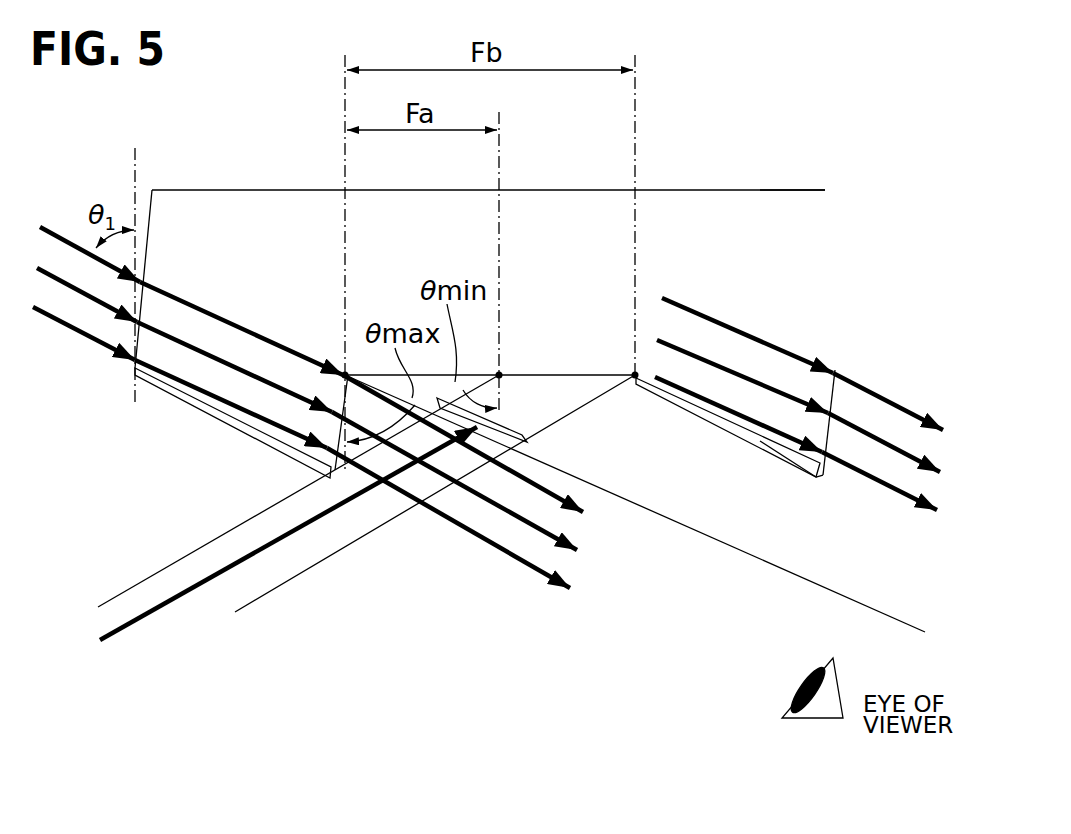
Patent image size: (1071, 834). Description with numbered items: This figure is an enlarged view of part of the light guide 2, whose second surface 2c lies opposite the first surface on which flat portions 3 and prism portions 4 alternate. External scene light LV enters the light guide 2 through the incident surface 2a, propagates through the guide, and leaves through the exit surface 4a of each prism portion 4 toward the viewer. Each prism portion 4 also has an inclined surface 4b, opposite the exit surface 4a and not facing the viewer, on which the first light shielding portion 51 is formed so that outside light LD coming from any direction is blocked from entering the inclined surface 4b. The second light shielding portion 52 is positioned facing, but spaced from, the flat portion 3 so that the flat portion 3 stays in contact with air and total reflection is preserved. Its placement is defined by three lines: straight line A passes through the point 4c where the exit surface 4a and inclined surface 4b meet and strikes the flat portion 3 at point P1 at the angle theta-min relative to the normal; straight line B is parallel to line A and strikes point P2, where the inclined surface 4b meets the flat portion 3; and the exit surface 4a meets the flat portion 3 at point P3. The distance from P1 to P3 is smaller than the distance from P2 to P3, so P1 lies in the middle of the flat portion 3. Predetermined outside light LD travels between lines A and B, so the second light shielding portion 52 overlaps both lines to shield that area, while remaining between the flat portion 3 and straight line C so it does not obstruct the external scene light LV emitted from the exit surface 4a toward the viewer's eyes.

The light guide 2 is at (698, 215).
The incident surface 2a is at (136, 294).
The second surface 2c is at (783, 190).
The flat portion 3 is at (567, 378).
The prism portion 4 is at (816, 471).
The exit surface 4a is at (828, 440).
The inclined surface 4b is at (788, 487).
The point where the exit surface and the inclined surface intersect 4c is at (330, 472).
The first light shielding portion 51 is at (731, 430).
The second light shielding portion 52 is at (520, 420).
The straight line A is at (176, 560).
The straight line B is at (300, 574).
The straight line C is at (888, 612).
The outside light LD is at (163, 612).
The external scene light LV is at (60, 232).
The point P1 is at (500, 372).
The point P2 is at (633, 372).
The point P3 is at (343, 372).